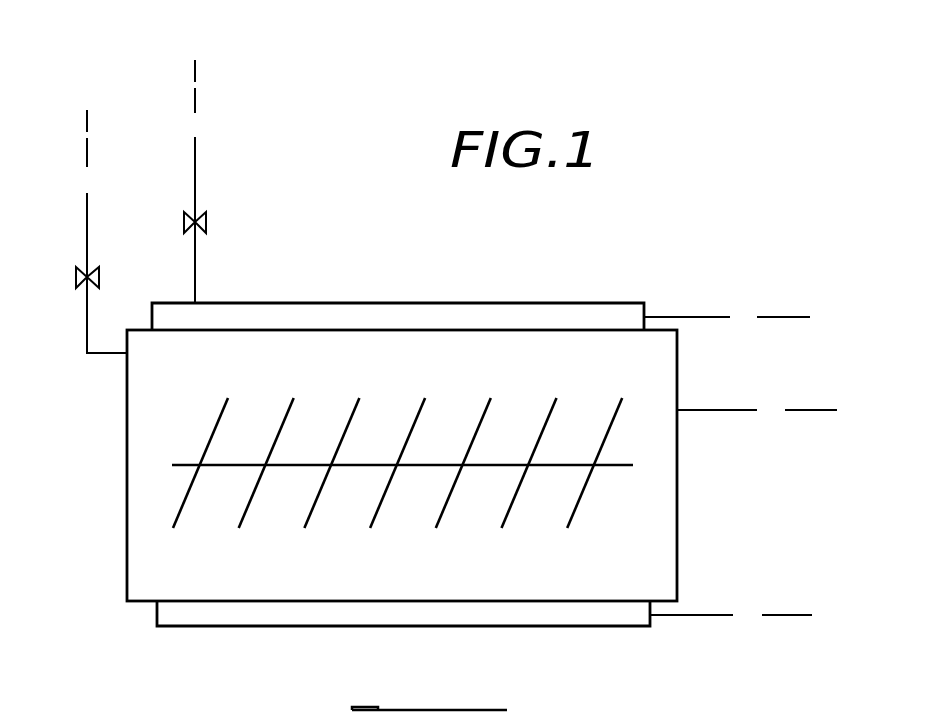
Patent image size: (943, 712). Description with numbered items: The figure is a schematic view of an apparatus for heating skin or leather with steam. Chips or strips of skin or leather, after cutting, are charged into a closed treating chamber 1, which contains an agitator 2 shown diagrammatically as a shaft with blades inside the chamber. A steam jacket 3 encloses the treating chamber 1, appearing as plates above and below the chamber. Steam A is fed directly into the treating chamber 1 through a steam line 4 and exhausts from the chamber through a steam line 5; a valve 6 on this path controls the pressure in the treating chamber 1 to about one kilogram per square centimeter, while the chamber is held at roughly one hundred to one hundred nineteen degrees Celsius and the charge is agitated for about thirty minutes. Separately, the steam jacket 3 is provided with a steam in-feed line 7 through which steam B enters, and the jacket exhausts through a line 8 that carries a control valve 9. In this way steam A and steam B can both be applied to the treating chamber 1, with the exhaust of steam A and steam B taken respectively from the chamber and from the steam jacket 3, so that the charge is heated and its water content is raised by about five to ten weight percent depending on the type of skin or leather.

The treating chamber 1 is at (313, 582).
The agitator 2 is at (443, 512).
The steam jacket 3 is at (608, 617).
The steam line 4 is at (502, 312).
The steam line 5 is at (87, 228).
The valve 6 is at (76, 278).
The steam in-feed line 7 is at (688, 317).
The line 8 is at (195, 267).
The control valve 9 is at (206, 221).